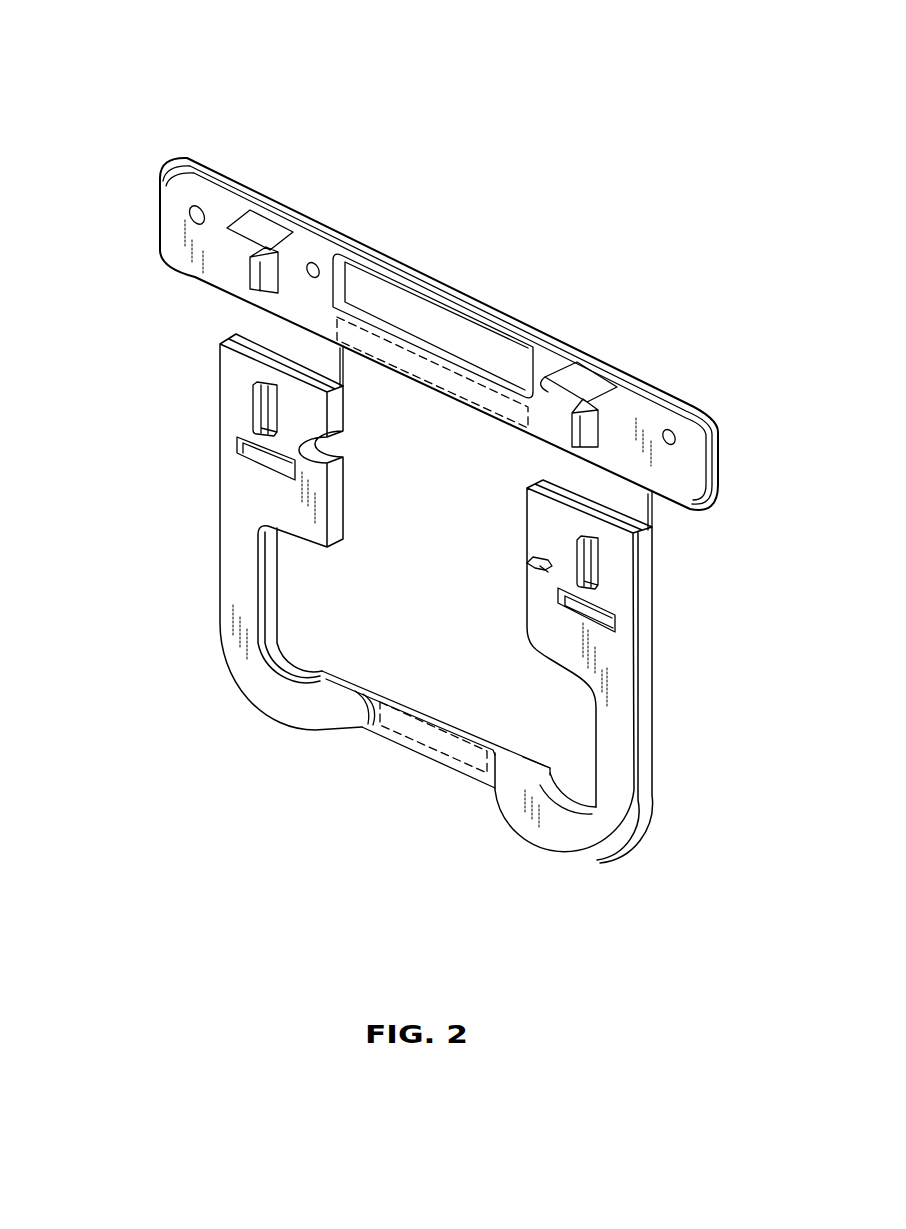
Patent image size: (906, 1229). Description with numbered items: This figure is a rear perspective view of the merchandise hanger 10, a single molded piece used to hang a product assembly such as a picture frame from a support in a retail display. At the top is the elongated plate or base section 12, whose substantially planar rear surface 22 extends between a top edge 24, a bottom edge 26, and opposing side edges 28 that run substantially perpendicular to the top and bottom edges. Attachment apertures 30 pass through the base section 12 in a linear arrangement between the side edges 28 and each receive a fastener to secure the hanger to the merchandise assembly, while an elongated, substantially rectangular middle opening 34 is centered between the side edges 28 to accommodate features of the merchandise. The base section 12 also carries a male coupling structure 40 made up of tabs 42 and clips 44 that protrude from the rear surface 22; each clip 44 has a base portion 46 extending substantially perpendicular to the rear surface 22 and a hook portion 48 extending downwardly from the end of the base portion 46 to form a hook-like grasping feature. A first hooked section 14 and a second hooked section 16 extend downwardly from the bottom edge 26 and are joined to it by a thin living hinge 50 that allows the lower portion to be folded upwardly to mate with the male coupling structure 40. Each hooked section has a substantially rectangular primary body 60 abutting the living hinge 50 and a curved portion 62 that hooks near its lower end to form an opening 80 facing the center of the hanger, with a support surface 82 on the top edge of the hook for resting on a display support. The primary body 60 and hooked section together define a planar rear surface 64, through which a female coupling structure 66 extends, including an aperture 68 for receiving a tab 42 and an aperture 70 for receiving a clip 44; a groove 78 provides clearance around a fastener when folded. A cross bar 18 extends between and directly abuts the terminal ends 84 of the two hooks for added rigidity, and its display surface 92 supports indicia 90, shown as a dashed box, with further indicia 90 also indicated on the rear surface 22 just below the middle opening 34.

The merchandise hanger 10 is at (244, 86).
The base section 12 is at (695, 457).
The first hooked section 14 is at (604, 671).
The second hooked section 16 is at (424, 610).
The cross bar 18 is at (436, 709).
The rear surface 22 is at (693, 430).
The top edge 24 is at (462, 292).
The bottom edge 26 is at (200, 282).
The opposing side edges 28 is at (160, 182).
The attachment apertures 30 is at (202, 208).
The middle opening 34 is at (460, 364).
The male coupling structure 40 is at (612, 410).
The tabs 42 is at (619, 403).
The clips 44 is at (580, 378).
The base portion 46 is at (600, 398).
The hook portion 48 is at (630, 508).
The living hinge 50 is at (323, 360).
The primary body 60 is at (233, 466).
The curved portion 62 is at (258, 678).
The rear surface 64 is at (238, 598).
The female coupling structure 66 is at (600, 594).
The aperture 68 is at (498, 563).
The aperture 70 is at (527, 632).
The groove 78 is at (527, 563).
The opening 80 is at (524, 756).
The support surface 82 is at (567, 803).
The terminal ends 84 is at (523, 783).
The indicia 90 is at (372, 329).
The display surface 92 is at (368, 724).